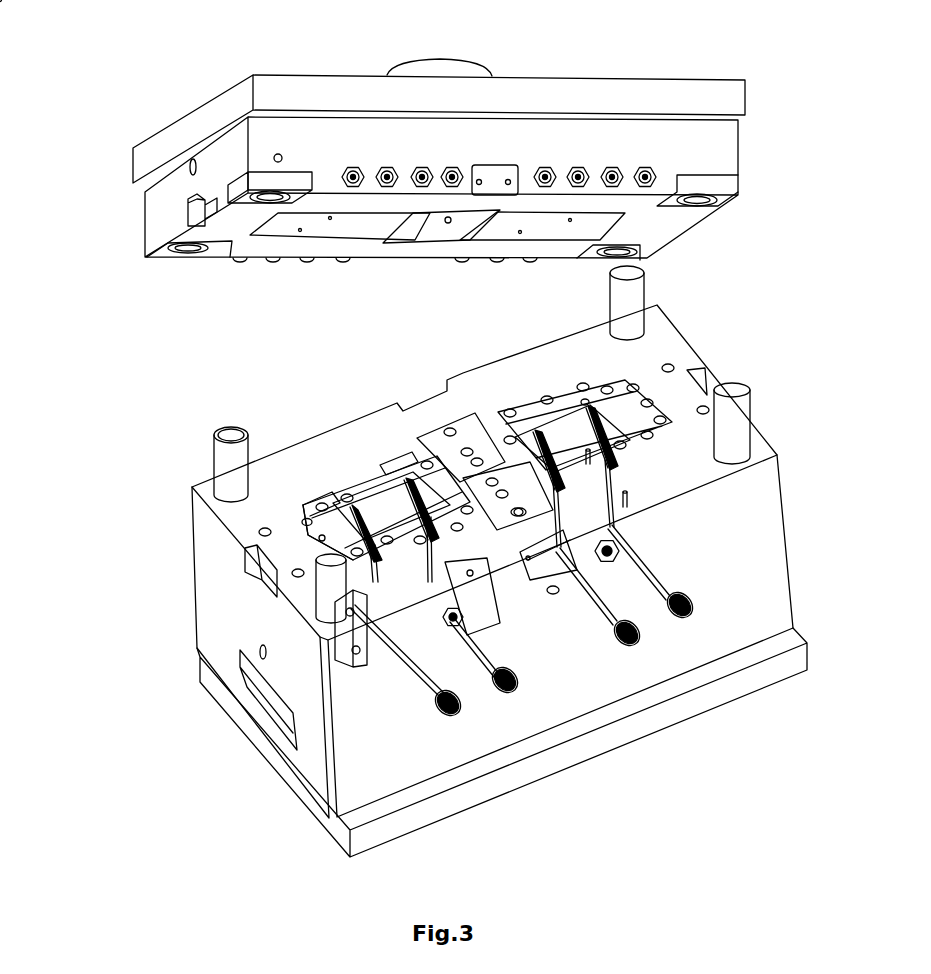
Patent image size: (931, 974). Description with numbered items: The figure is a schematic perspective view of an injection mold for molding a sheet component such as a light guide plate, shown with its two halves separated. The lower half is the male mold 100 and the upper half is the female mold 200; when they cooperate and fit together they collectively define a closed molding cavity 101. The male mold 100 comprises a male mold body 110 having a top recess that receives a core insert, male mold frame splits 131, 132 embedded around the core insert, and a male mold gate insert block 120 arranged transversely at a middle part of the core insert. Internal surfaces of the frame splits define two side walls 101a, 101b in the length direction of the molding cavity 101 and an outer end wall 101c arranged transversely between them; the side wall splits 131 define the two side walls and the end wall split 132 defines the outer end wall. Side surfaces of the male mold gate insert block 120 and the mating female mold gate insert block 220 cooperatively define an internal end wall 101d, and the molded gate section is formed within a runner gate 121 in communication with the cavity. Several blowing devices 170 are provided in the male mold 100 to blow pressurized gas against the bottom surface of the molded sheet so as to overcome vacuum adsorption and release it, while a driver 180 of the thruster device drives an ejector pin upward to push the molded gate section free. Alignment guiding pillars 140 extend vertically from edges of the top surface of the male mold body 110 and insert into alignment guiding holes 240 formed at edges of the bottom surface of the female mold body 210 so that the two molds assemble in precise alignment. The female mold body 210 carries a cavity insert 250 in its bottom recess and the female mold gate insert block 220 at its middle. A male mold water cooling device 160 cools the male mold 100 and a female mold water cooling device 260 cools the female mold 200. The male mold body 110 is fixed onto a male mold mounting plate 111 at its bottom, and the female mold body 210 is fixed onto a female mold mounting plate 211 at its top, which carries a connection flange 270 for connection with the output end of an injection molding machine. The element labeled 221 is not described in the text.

The male mold 100 is at (235, 774).
The molding cavity 101 is at (337, 517).
The side wall 101a is at (383, 507).
The side wall 101b is at (377, 563).
The outer end wall 101c is at (358, 518).
The internal end wall 101d is at (447, 487).
The male mold body 110 is at (777, 573).
The male mold mounting plate 111 is at (797, 665).
The male mold gate insert block 120 is at (467, 427).
The runner gate 121 is at (490, 467).
The side wall splits 131 is at (397, 473).
The end wall split 132 is at (330, 500).
The alignment guiding pillars 140 is at (228, 433).
The male mold water cooling device 160 is at (633, 548).
The blowing devices 170 is at (687, 627).
The driver 180 is at (272, 710).
The female mold 200 is at (121, 199).
The female mold body 210 is at (728, 138).
The female mold mounting plate 211 is at (733, 92).
The female mold gate insert block 220 is at (403, 237).
The locating pin 221 is at (448, 222).
The alignment guiding holes 240 is at (190, 256).
The cavity insert 250 is at (340, 225).
The female mold water cooling device 260 is at (347, 167).
The connection flange 270 is at (470, 66).